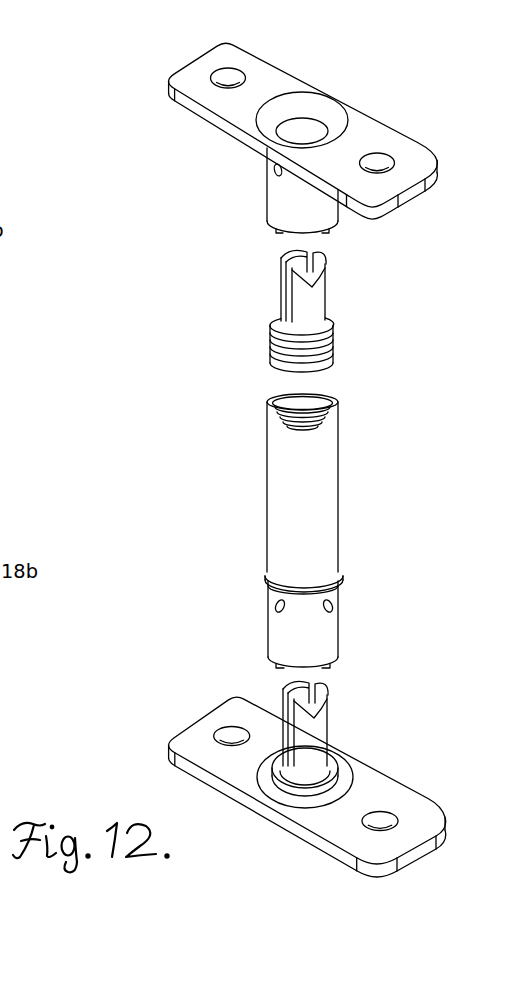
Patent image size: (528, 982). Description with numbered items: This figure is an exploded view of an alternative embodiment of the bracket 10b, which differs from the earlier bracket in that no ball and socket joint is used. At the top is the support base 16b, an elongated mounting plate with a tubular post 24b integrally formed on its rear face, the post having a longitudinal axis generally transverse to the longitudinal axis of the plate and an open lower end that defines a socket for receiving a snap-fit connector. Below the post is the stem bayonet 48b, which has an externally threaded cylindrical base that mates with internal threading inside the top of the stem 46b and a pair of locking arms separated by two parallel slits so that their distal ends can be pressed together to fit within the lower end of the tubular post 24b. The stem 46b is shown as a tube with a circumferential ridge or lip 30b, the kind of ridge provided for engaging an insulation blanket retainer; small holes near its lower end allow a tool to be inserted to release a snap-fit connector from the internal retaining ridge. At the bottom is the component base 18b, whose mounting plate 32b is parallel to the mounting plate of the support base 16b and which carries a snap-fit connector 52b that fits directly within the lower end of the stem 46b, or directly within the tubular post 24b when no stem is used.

The bracket 10b is at (392, 72).
The support base 16b is at (420, 132).
The tubular post 24b is at (277, 200).
The stem bayonet 48b is at (346, 317).
The stem 46b is at (353, 497).
The circumferential ridge or lip 30b is at (340, 572).
The component base 18b is at (418, 778).
The mounting plate 32b is at (190, 743).
The snap-fit connector 52b is at (327, 708).